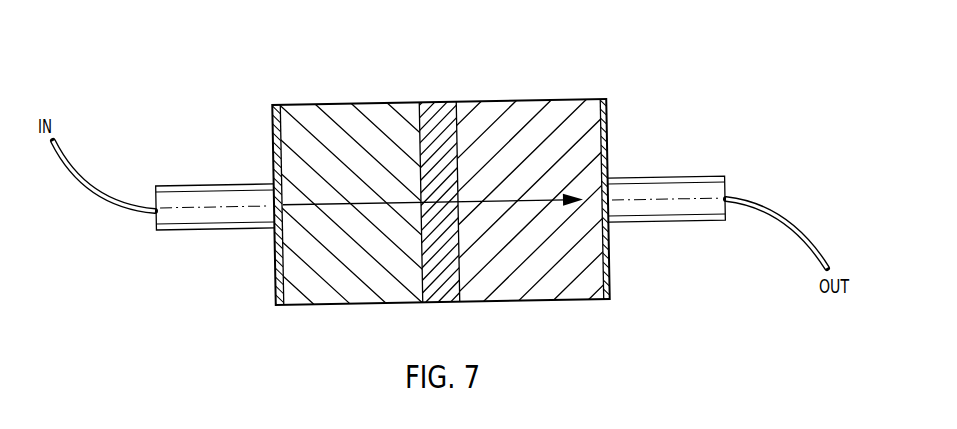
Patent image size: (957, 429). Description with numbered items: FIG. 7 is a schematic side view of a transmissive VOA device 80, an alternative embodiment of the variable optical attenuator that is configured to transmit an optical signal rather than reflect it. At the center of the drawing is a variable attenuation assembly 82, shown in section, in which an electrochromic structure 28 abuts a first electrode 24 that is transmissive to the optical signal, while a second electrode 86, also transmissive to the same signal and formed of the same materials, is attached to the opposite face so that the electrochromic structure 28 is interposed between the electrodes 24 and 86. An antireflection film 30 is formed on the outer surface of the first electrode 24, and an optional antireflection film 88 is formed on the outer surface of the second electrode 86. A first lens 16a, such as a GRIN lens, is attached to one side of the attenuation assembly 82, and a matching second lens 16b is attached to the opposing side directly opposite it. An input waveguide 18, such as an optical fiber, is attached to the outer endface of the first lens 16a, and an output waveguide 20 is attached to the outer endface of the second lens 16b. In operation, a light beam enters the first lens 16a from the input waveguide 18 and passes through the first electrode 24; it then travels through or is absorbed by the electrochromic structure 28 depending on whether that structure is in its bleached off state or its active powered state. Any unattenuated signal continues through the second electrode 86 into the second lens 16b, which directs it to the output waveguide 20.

The transmissive VOA device 80 is at (240, 102).
The variable attenuation assembly 82 is at (431, 209).
The first lens 16a is at (218, 194).
The second lens 16b is at (658, 213).
The input waveguide 18 is at (95, 193).
The output waveguide 20 is at (780, 213).
The first electrode 24 is at (353, 292).
The electrochromic structure 28 is at (438, 296).
The second electrode 86 is at (525, 289).
The antireflection film 30 is at (276, 267).
The antireflection film 88 is at (608, 286).